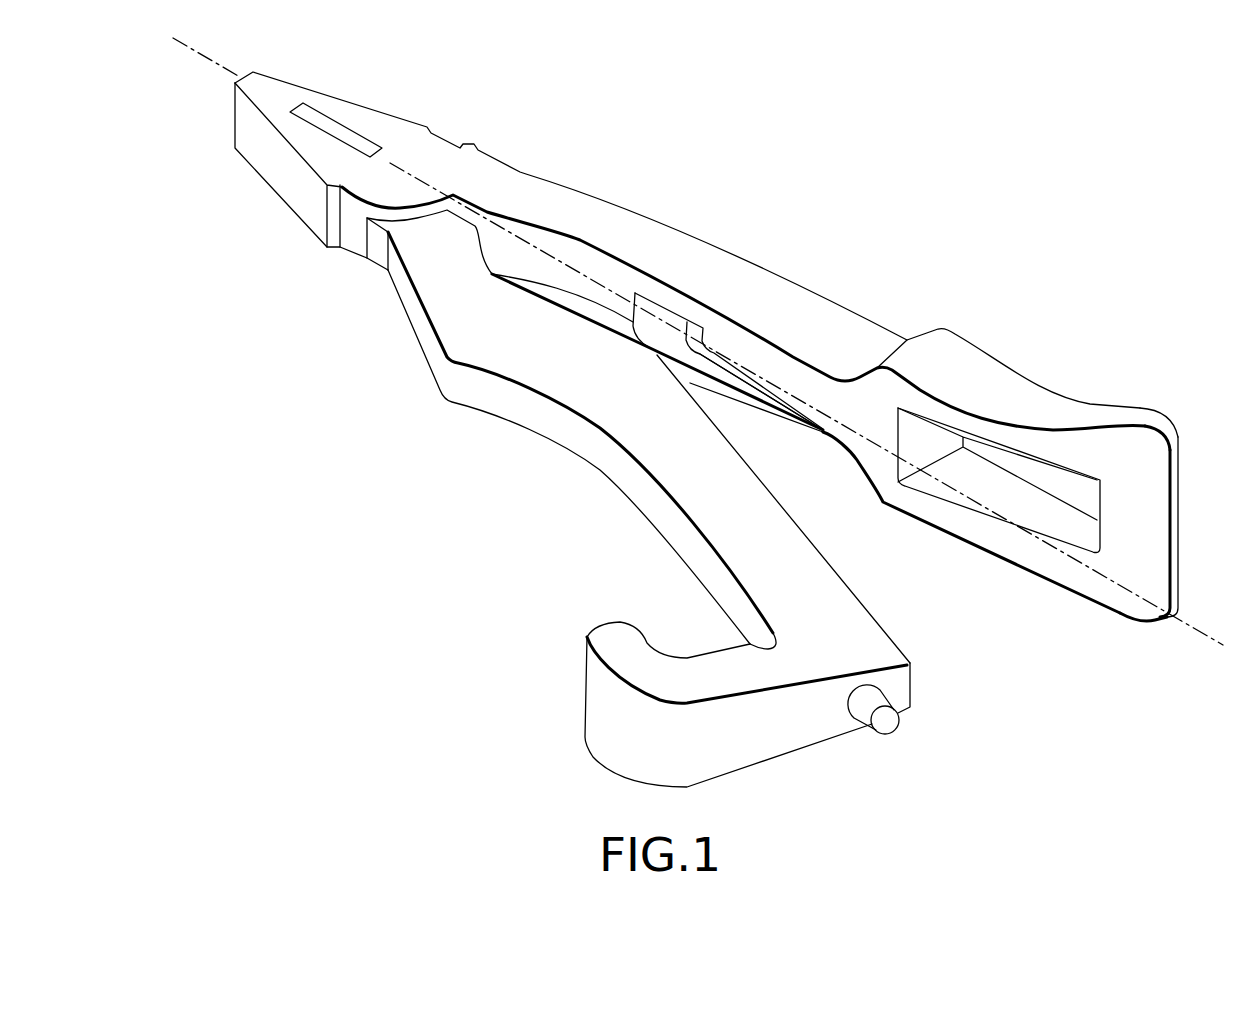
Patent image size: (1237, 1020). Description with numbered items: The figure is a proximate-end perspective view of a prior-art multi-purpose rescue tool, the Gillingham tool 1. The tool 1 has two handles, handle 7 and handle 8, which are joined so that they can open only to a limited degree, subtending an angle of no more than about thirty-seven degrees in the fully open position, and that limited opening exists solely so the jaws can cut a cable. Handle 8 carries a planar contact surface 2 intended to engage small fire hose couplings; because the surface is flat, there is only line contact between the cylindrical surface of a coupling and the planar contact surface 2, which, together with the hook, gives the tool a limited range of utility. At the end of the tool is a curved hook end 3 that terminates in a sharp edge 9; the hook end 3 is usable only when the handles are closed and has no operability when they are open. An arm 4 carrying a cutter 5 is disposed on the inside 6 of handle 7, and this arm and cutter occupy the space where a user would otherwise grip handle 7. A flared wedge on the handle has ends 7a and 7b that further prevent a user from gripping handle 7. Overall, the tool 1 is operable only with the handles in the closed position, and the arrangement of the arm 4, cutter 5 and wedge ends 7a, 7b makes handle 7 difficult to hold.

The Gillingham tool 1 is at (826, 211).
The planar contact surface 2 is at (640, 497).
The hook end 3 is at (587, 635).
The arm 4 is at (653, 323).
The cutter 5 is at (741, 410).
The inside of handle 6 is at (860, 458).
The handle 7 is at (822, 310).
The flared wedge end 7a is at (1158, 420).
The flared wedge end 7b is at (1098, 604).
The handle 8 is at (613, 408).
The terminal sharp edge 9 is at (630, 622).